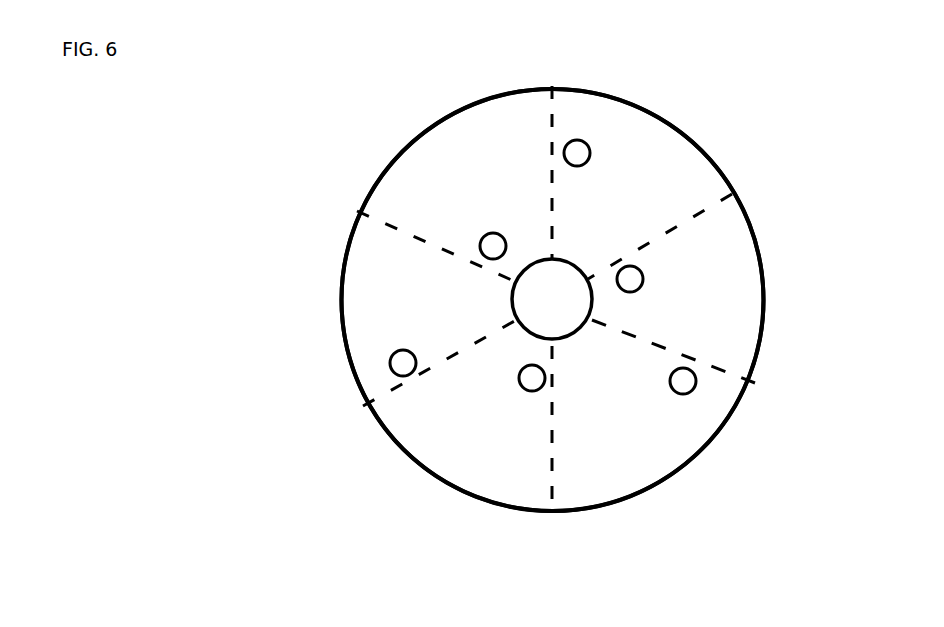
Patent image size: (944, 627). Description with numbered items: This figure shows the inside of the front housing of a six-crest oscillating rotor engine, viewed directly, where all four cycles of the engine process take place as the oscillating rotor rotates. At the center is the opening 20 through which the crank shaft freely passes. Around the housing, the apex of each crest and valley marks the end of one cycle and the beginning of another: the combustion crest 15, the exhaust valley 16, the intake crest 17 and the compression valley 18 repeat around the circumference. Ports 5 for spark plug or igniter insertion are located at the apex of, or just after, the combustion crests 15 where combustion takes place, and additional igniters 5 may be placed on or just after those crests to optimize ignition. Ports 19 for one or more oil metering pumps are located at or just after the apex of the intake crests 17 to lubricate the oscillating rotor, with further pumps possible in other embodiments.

The spark plug or ignition insertion port 5 is at (575, 138).
The combustion crest 15 is at (380, 212).
The exhaust valley 16 is at (445, 138).
The intake crest 17 is at (552, 98).
The compression valley 18 is at (653, 133).
The oil metering pump insertion port 19 is at (482, 243).
The crank shaft pass-through 20 is at (560, 298).